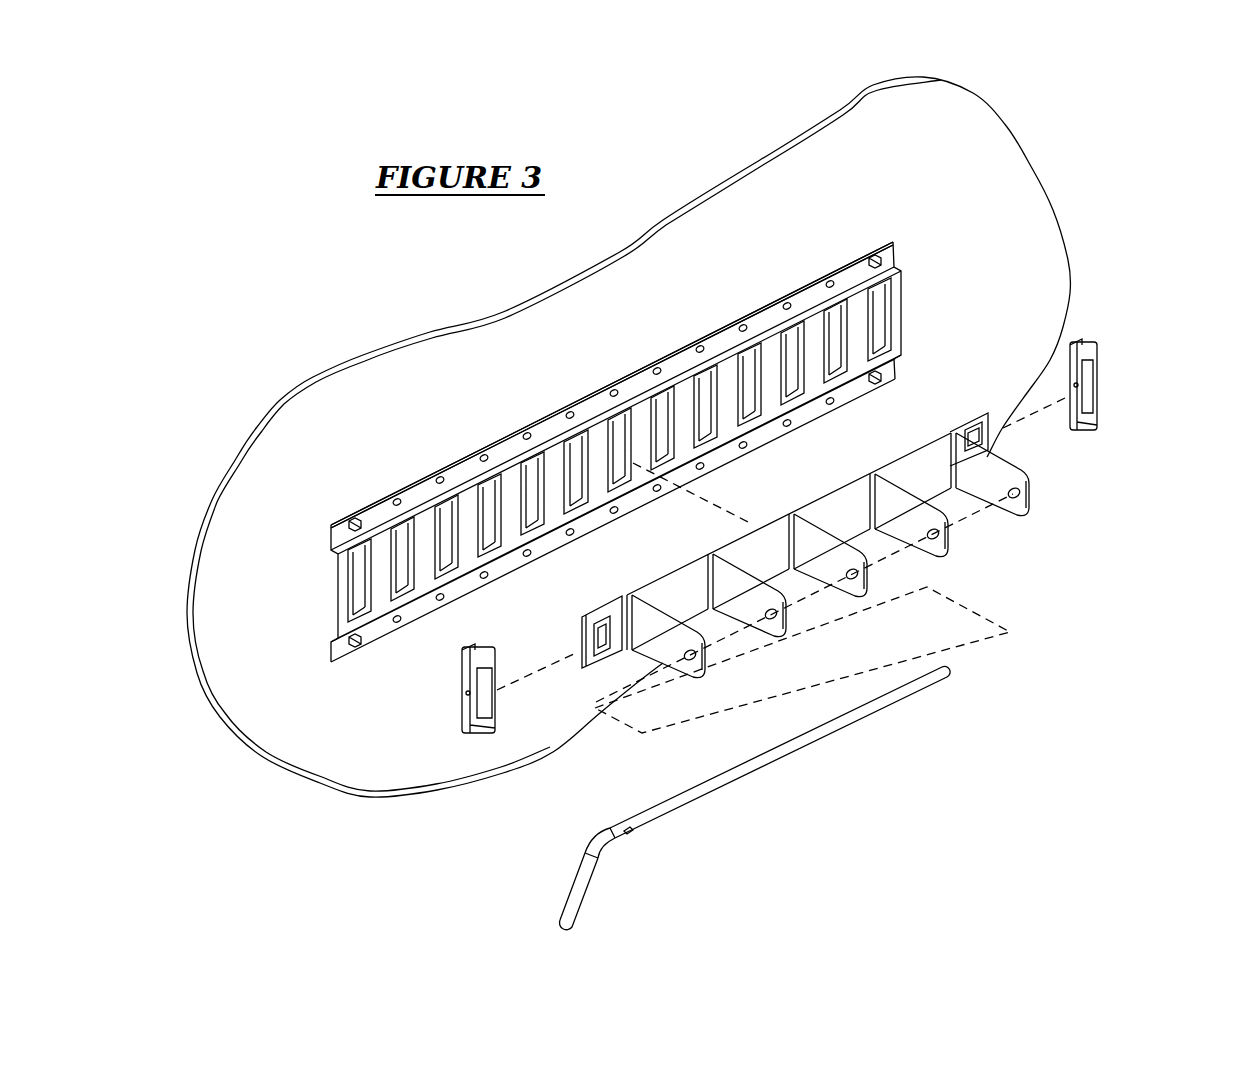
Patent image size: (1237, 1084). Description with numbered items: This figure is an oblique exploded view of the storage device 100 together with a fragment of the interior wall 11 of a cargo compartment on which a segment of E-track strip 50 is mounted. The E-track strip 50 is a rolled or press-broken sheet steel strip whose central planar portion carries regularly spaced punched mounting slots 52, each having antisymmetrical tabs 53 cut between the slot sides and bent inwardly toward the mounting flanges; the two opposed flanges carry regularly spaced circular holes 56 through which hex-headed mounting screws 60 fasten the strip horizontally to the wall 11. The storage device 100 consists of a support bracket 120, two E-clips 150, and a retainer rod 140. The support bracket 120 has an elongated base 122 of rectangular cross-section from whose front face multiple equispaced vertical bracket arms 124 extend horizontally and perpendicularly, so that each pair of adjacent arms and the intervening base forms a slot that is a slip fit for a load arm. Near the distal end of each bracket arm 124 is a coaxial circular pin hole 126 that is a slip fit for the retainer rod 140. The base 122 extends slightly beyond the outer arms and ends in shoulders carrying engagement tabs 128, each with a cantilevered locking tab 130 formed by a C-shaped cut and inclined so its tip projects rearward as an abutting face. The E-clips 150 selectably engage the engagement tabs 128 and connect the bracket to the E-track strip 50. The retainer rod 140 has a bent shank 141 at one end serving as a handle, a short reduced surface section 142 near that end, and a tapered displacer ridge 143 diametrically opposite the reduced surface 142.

The interior wall 11 is at (1000, 270).
The E-track strip 50 is at (657, 471).
The mounting slots 52 is at (493, 548).
The antisymmetrical tabs 53 is at (887, 327).
The circular holes 56 is at (783, 303).
The mounting screws 60 is at (353, 647).
The storage device 100 is at (817, 633).
The support bracket 120 is at (817, 563).
The base 122 is at (902, 455).
The bracket arms 124 is at (1045, 494).
The pin hole 126 is at (1024, 478).
The engagement tab 128 is at (580, 632).
The locking tab 130 is at (565, 693).
The retainer rod 140 is at (741, 797).
The bent shank 141 is at (585, 897).
The reduced surface section 142 is at (613, 830).
The displacer ridge 143 is at (632, 833).
The E-clips 150 is at (460, 707).